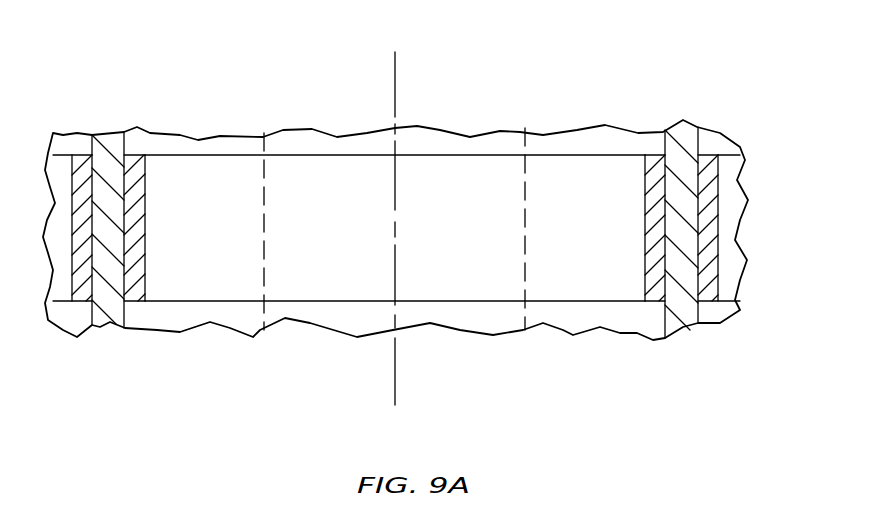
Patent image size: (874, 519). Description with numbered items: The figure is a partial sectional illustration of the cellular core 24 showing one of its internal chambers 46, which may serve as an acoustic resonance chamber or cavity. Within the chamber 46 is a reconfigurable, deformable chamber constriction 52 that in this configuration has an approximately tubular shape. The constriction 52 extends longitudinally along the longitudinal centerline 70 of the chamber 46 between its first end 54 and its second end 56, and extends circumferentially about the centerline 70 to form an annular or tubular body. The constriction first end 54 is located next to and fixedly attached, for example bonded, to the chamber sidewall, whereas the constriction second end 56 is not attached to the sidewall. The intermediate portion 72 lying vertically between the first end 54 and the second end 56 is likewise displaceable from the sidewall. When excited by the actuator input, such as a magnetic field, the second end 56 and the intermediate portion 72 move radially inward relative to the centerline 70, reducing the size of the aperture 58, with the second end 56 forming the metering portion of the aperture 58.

The cellular core 24 is at (762, 96).
The internal chamber 46 is at (222, 174).
The chamber constriction 52 is at (599, 151).
The constriction first end 54 is at (542, 155).
The constriction second end 56 is at (575, 301).
The aperture 58 is at (308, 284).
The longitudinal centerline 70 is at (397, 73).
The intermediate portion 72 is at (153, 163).